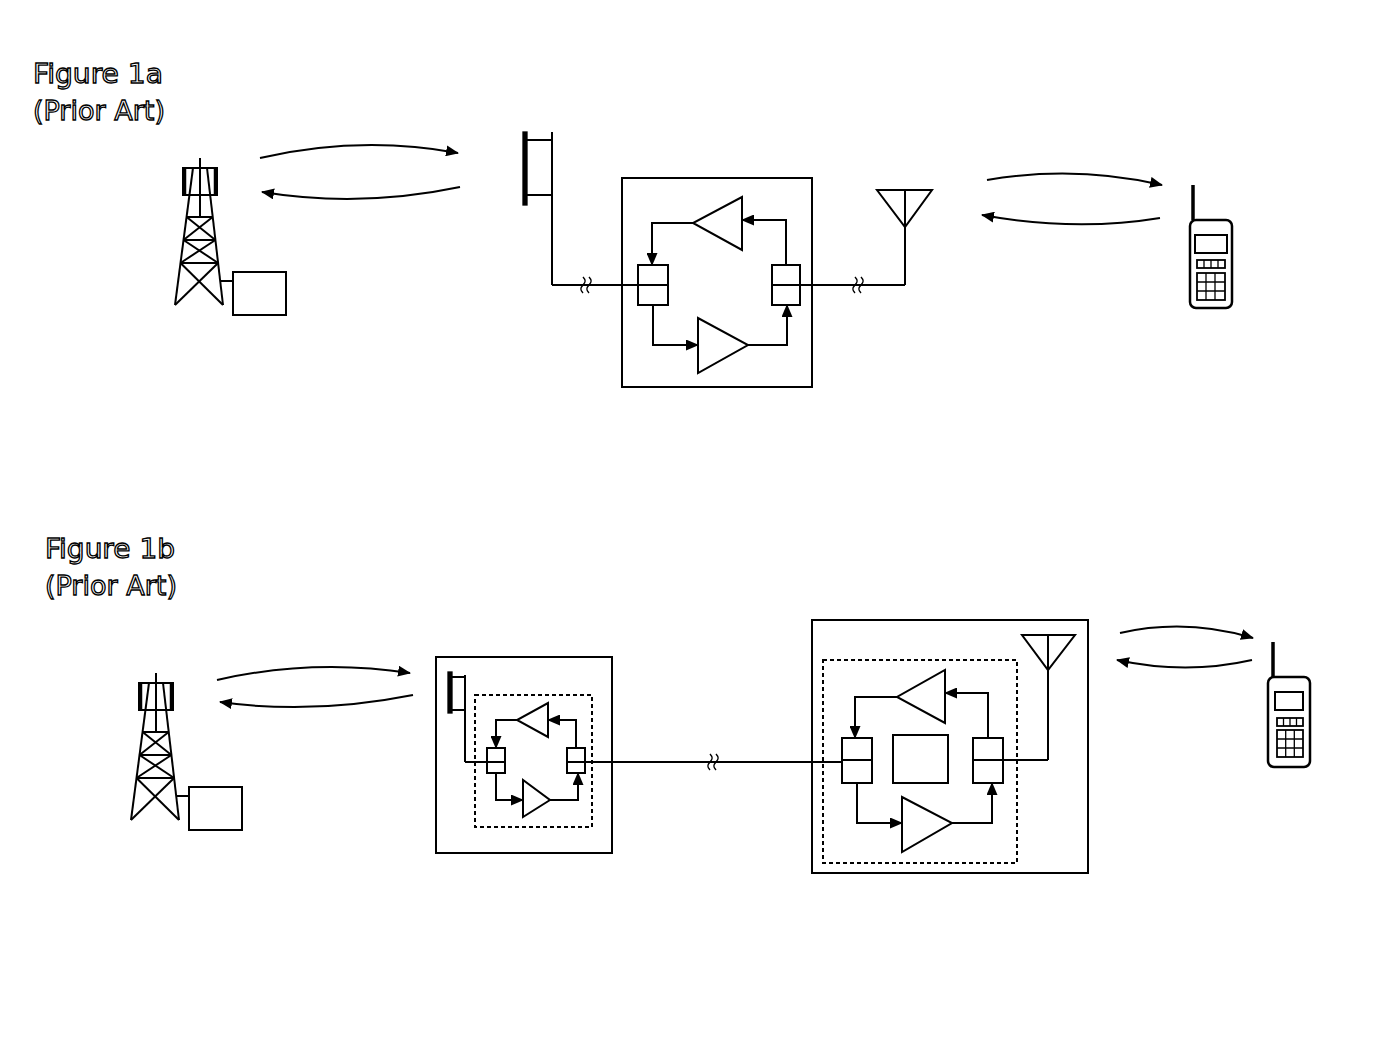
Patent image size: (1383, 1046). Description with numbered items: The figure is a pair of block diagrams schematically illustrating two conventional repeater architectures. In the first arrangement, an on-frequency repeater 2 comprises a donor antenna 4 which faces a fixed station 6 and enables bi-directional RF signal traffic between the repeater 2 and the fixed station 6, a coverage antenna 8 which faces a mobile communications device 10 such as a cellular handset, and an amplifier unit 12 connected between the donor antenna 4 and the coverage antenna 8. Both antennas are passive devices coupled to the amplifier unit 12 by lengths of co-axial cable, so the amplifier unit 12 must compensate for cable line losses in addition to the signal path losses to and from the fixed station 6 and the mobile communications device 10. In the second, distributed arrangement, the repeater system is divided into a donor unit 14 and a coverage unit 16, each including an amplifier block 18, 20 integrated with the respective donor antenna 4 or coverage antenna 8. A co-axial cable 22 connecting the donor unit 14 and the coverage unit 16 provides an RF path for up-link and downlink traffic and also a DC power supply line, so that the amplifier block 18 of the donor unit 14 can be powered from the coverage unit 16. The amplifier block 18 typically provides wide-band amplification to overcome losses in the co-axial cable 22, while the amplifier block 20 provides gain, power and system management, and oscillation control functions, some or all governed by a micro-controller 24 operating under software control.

In FIG. 1A, the on-frequency repeater 2 is at (830, 119).
In FIG. 1A, the donor antenna 4 is at (555, 163).
In FIG. 1B, the donor antenna 4 is at (467, 688).
In FIG. 1A, the fixed station 6 is at (286, 298).
In FIG. 1B, the fixed station 6 is at (243, 819).
In FIG. 1A, the coverage antenna 8 is at (920, 190).
In FIG. 1B, the coverage antenna 8 is at (1030, 650).
In FIG. 1A, the mobile communications device 10 is at (1232, 238).
In FIG. 1B, the mobile communications device 10 is at (1310, 710).
In FIG. 1A, the amplifier unit 12 is at (720, 178).
In FIG. 1B, the donor unit 14 is at (533, 657).
In FIG. 1B, the coverage unit 16 is at (953, 620).
In FIG. 1B, the amplifier block 18 is at (555, 695).
In FIG. 1B, the amplifier block 20 is at (920, 747).
In FIG. 1B, the co-axial cable 22 is at (650, 762).
In FIG. 1B, the micro-controller 24 is at (908, 773).